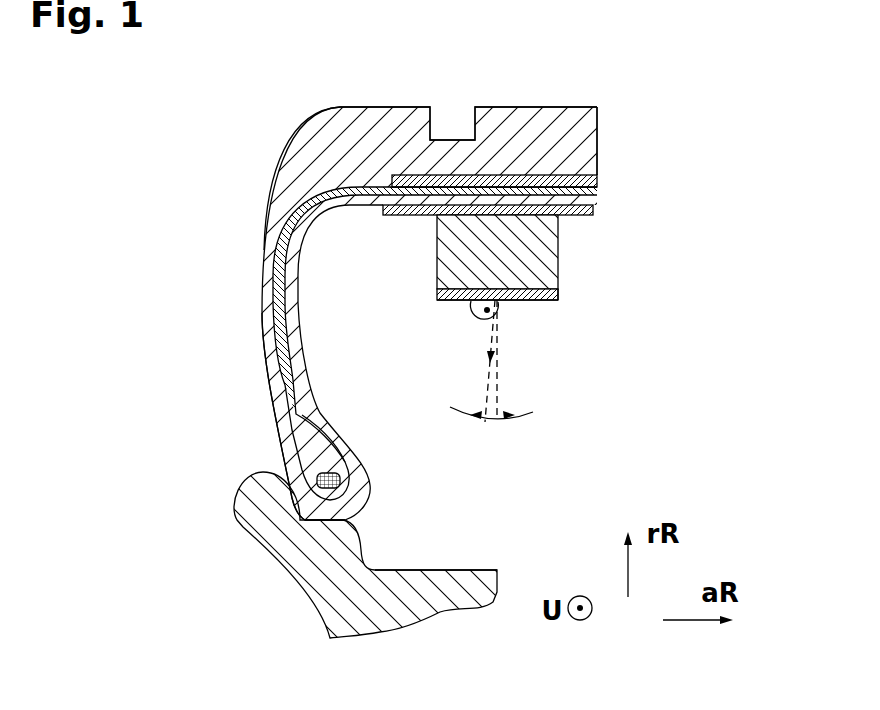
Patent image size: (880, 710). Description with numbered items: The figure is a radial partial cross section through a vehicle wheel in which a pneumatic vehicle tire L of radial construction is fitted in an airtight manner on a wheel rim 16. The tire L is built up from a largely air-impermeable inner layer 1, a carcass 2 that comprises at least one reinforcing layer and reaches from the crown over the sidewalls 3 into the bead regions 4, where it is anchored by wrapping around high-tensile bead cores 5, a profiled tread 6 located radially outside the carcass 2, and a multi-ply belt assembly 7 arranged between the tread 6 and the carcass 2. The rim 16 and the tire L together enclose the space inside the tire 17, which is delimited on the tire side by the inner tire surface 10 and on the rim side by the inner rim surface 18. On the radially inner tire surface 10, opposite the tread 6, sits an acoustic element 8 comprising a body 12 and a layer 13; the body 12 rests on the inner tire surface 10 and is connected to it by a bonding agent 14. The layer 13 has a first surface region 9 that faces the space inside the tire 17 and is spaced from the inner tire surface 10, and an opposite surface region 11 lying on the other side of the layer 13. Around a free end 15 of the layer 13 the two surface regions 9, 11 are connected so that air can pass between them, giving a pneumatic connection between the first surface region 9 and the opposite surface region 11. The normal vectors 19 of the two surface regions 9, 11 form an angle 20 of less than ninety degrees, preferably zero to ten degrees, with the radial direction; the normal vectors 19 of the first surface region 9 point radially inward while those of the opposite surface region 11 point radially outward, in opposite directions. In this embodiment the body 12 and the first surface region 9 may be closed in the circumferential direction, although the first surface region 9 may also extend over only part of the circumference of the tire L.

The inner layer 1 is at (290, 277).
The carcass 2 is at (288, 378).
The sidewall 3 is at (270, 325).
The bead region 4 is at (278, 462).
The bead core 5 is at (328, 492).
The tread 6 is at (510, 130).
The belt assembly 7 is at (557, 180).
The acoustic element 8 is at (554, 294).
The first surface region 9 is at (547, 299).
The inner tire surface 10 is at (345, 398).
The opposite surface region 11 is at (530, 287).
The body 12 is at (530, 247).
The layer 13 is at (515, 297).
The bonding agent 14 is at (593, 212).
The free end 15 is at (560, 293).
The wheel rim 16 is at (332, 588).
The space inside the tire 17 is at (340, 235).
The inner rim surface 18 is at (462, 570).
The normal vector 19 is at (492, 343).
The angle 20 is at (525, 417).
The pneumatic vehicle tire L is at (636, 102).